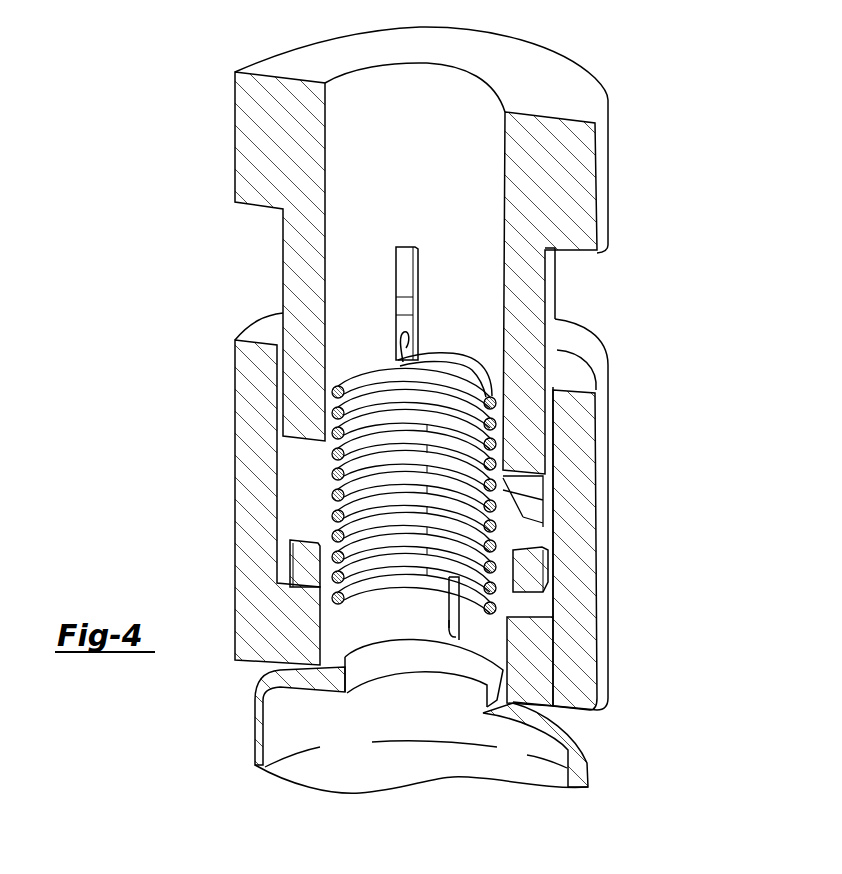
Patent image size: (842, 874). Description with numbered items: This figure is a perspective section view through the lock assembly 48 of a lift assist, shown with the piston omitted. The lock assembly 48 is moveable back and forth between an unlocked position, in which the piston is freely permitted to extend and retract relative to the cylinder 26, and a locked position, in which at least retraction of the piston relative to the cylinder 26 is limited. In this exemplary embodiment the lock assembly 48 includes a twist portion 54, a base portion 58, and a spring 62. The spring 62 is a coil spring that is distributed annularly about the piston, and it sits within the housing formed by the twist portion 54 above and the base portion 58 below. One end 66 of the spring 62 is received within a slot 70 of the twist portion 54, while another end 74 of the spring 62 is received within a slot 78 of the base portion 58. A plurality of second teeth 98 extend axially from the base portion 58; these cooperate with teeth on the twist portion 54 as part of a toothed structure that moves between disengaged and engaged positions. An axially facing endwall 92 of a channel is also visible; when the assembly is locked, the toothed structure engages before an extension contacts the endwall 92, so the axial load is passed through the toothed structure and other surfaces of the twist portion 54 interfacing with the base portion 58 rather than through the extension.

The cylinder 26 is at (578, 757).
The lock assembly 48 is at (672, 430).
The twist portion 54 is at (525, 295).
The base portion 58 is at (263, 432).
The spring 62 is at (505, 358).
The one end of the spring 66 is at (412, 344).
The slot of the twist portion 70 is at (400, 262).
The another end of the spring 74 is at (453, 587).
The slot of the base portion 78 is at (453, 632).
The axially facing endwall 92 is at (517, 502).
The second teeth 98 is at (530, 565).